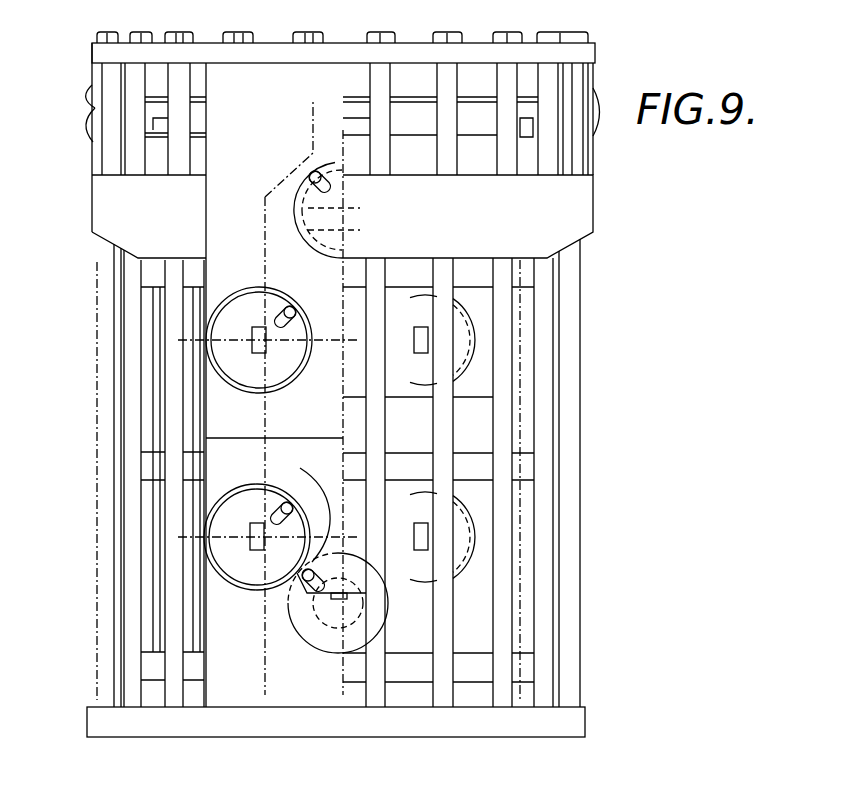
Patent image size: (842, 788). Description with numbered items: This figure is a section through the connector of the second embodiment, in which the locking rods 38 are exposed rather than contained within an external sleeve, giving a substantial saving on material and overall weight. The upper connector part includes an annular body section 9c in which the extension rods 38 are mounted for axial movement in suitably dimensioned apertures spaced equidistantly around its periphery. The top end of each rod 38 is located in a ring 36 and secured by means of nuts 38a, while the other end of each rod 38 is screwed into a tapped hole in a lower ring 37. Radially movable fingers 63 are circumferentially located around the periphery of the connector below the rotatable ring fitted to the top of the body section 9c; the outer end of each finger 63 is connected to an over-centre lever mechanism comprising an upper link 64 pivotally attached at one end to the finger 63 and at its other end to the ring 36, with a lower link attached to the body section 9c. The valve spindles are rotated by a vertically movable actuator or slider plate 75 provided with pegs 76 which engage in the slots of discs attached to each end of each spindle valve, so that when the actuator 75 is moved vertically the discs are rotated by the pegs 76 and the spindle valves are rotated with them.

The annular body section 9c is at (108, 209).
The ring 36 is at (403, 55).
The lower ring 37 is at (243, 720).
The extension rods 38 is at (105, 470).
The nuts 38a is at (258, 28).
The radially movable fingers 63 is at (92, 145).
The upper link 64 is at (93, 100).
The actuator or slider plate 75 is at (310, 232).
The pegs 76 is at (312, 174).